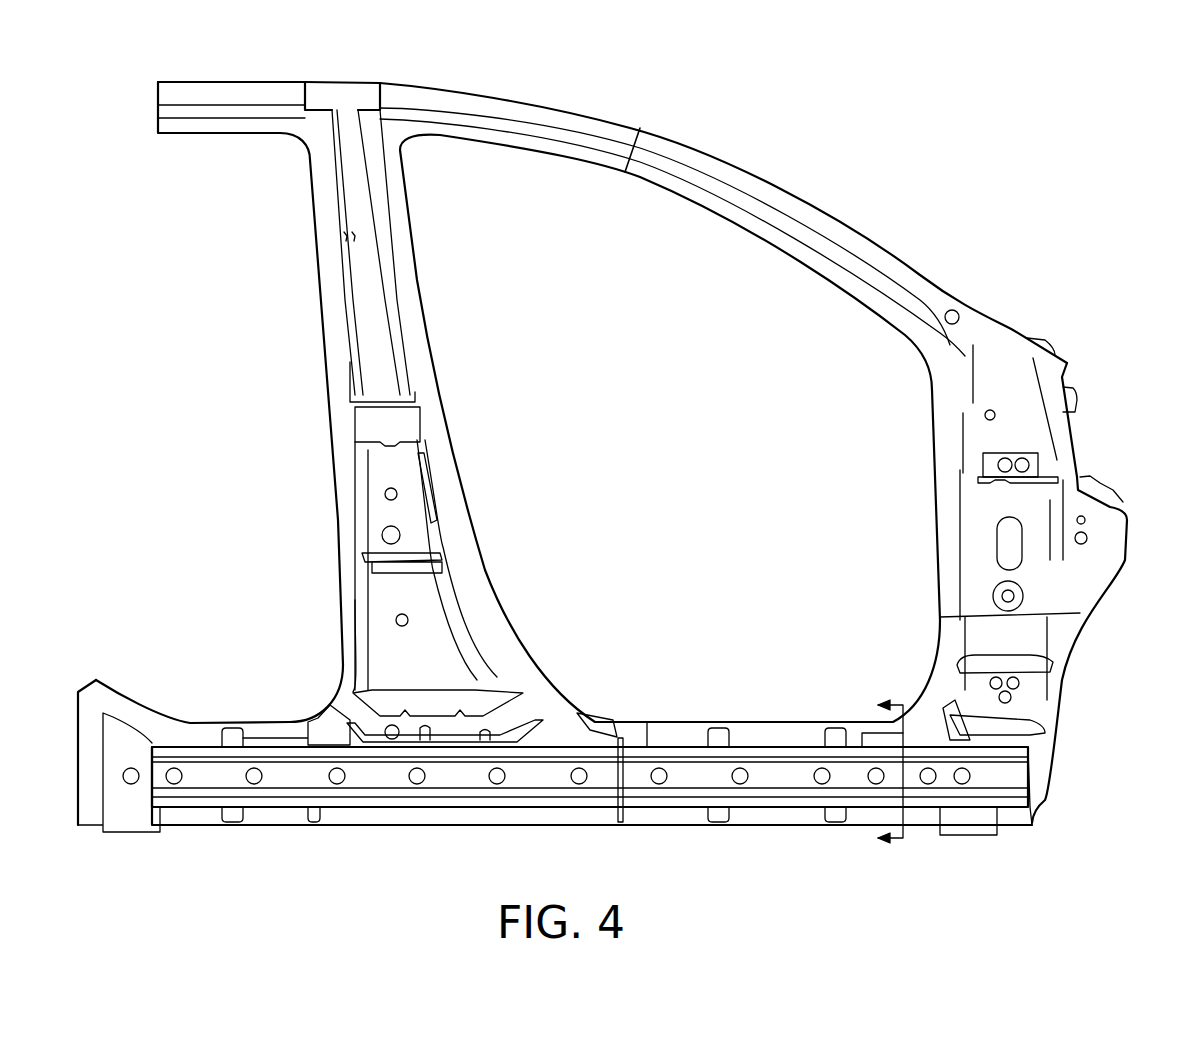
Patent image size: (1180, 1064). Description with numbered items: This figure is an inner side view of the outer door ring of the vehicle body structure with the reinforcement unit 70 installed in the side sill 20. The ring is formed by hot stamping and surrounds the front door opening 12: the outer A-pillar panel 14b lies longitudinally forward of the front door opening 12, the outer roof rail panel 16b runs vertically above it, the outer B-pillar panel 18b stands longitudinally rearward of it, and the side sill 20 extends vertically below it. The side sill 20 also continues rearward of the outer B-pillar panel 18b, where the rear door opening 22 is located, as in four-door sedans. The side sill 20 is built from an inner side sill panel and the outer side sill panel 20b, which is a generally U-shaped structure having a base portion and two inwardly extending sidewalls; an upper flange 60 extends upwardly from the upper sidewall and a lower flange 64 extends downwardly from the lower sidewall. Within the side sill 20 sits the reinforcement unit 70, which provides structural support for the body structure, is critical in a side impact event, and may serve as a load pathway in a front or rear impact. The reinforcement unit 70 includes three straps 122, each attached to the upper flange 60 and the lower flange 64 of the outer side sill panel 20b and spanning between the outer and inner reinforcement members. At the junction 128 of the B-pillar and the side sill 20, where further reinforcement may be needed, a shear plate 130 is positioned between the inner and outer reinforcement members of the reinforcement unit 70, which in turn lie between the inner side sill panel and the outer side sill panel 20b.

The front door opening 12 is at (706, 505).
The outer A-pillar panel 14b is at (1040, 537).
The outer roof rail panel 16b is at (507, 107).
The outer B-pillar panel 18b is at (328, 442).
The side sill 20 is at (607, 775).
The outer side sill panel 20b is at (1038, 770).
The rear door opening 22 is at (243, 569).
The upper flange 60 is at (863, 733).
The lower flange 64 is at (890, 813).
The reinforcement unit 70 is at (785, 778).
The strap 122 is at (232, 728).
The junction 128 is at (518, 695).
The shear plate 130 is at (318, 718).